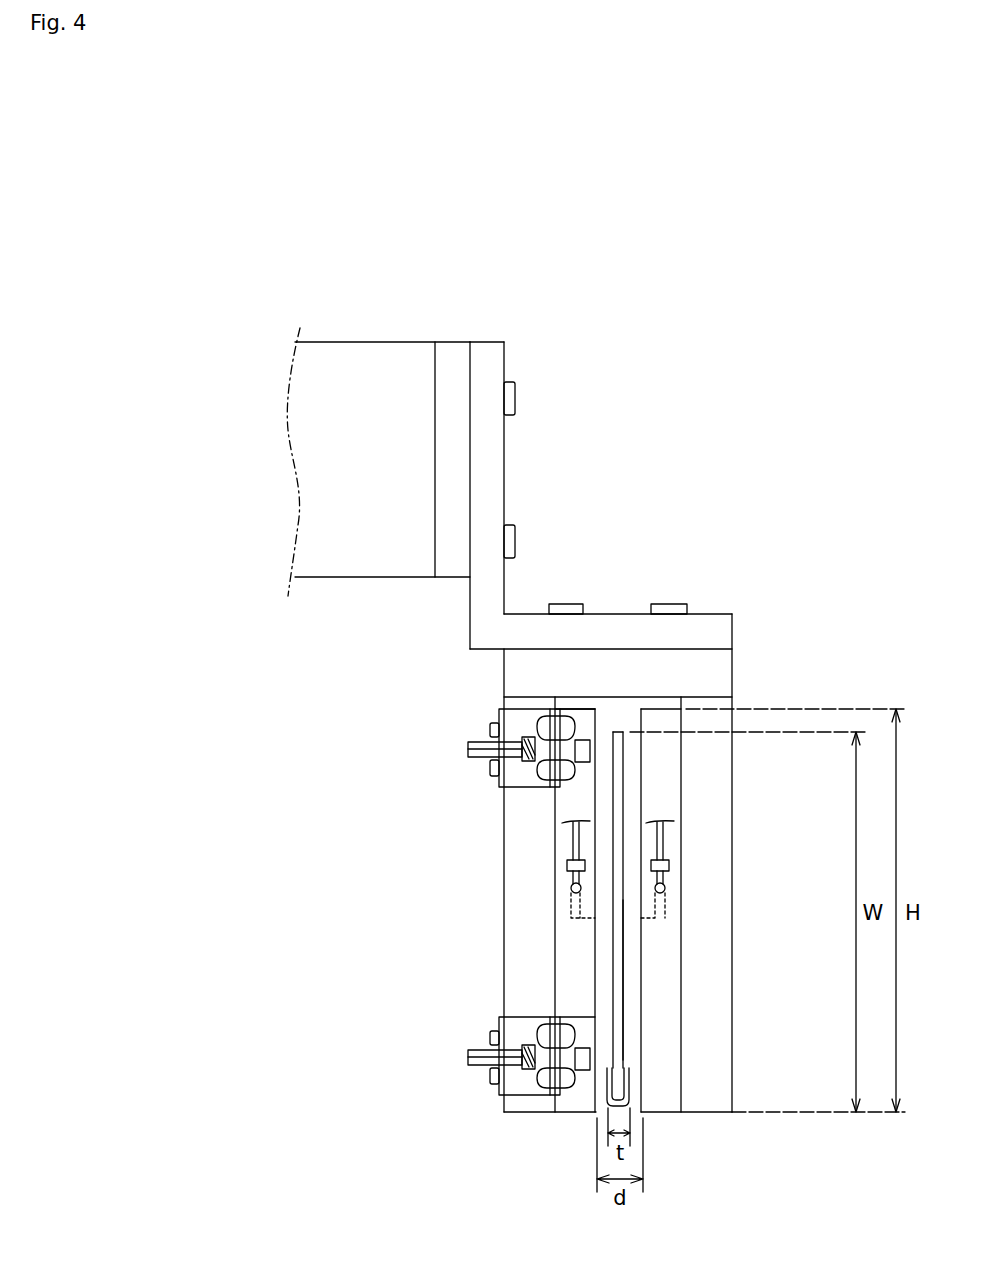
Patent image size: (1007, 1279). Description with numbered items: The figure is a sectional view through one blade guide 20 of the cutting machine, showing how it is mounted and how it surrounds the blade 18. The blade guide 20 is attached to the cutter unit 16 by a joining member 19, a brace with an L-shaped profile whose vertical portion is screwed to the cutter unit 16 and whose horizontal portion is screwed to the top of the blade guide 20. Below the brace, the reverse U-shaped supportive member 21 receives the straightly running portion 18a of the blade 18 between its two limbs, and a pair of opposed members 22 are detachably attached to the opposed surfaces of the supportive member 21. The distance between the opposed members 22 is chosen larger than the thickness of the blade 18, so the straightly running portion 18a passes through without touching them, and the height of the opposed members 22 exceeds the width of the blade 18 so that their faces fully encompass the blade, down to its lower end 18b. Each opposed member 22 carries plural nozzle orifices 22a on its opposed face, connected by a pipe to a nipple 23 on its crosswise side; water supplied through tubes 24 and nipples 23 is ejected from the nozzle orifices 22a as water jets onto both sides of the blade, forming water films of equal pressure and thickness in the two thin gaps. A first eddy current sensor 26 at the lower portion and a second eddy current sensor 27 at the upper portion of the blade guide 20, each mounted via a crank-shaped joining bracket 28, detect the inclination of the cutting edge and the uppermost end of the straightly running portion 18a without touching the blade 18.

The cutter unit 16 is at (378, 336).
The blade 18 is at (628, 987).
The straightly running portion of the blade 18a is at (625, 1033).
The sheet lower end 18b is at (620, 1108).
The joining member 19 is at (506, 460).
The blade guide 20 is at (748, 645).
The supportive member 21 is at (720, 781).
The opposed member 22 is at (580, 1103).
The nozzle orifice 22a is at (586, 921).
The nipple 23 is at (573, 876).
The tube 24 is at (573, 838).
The first eddy current sensor 26 is at (580, 1077).
The second eddy current sensor 27 is at (583, 765).
The crank-shaped joining bracket 28 is at (518, 1090).